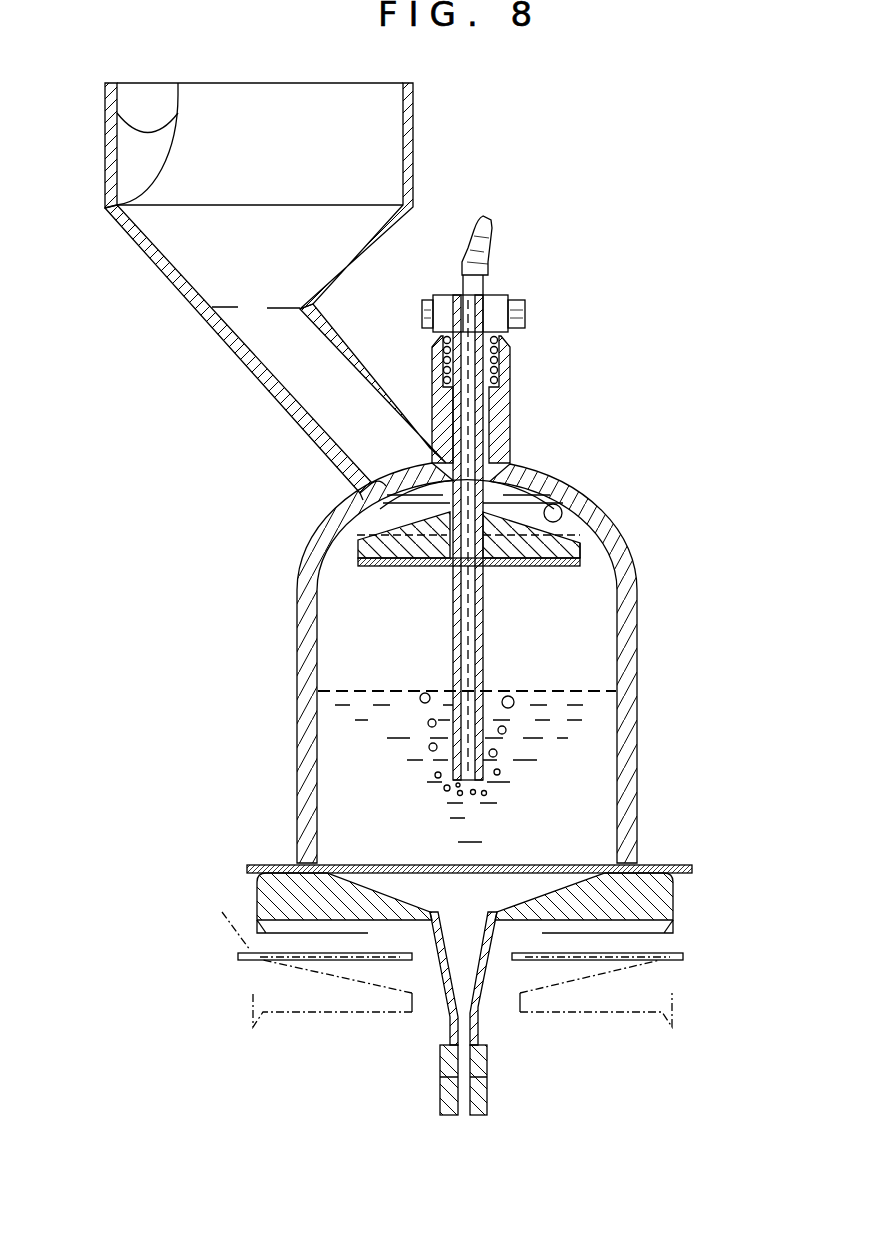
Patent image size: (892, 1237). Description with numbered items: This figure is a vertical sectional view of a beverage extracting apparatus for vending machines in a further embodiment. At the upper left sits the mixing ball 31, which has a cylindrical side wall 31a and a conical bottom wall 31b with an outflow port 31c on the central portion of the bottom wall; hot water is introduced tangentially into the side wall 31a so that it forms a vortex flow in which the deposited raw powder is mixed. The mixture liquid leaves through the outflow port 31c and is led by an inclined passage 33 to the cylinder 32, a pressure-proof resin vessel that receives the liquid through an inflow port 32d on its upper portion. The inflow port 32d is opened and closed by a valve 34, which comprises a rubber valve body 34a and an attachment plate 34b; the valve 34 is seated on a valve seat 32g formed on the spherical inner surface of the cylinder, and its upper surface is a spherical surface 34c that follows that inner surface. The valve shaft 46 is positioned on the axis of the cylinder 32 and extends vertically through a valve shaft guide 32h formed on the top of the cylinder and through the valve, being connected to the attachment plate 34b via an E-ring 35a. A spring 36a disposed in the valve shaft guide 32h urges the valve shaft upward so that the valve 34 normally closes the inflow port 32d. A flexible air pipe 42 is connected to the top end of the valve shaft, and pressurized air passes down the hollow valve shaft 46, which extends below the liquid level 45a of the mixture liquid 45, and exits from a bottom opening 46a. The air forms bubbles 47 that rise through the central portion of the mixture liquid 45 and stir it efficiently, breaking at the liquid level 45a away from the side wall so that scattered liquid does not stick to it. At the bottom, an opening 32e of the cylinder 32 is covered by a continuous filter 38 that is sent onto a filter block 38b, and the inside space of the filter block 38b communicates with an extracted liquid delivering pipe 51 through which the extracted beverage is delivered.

The mixing ball 31 is at (417, 166).
The cylindrical side wall 31a is at (106, 142).
The conical bottom wall 31b is at (139, 247).
The outflow port 31c is at (279, 308).
The chute 33 is at (343, 336).
The air pipe 42 is at (489, 242).
The valve shaft 46 is at (484, 283).
The spring 36a is at (498, 372).
The valve shaft guide 32h is at (510, 410).
The cylinder 32 is at (634, 788).
The inflow port 32d is at (360, 492).
The valve 34 is at (541, 483).
The valve seat 32g is at (578, 511).
The spherical surface 34c is at (366, 547).
The rubber valve body 34a is at (510, 558).
The attachment plate 34b is at (558, 566).
The E-ring 35a is at (450, 566).
The liquid level 45a is at (637, 691).
The mixture liquid 45 is at (594, 743).
The bubbles 47 is at (428, 722).
The bottom opening 46a is at (466, 786).
The opening 32e is at (343, 850).
The filter 38 is at (258, 877).
The filter block 38b is at (672, 993).
The extracted liquid delivering pipe 51 is at (488, 1082).